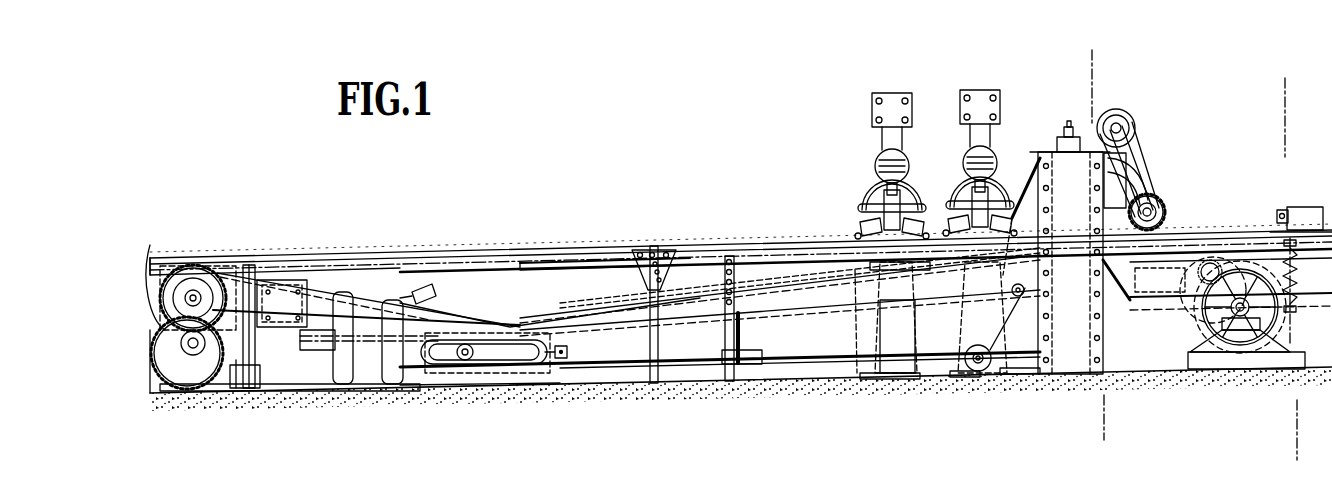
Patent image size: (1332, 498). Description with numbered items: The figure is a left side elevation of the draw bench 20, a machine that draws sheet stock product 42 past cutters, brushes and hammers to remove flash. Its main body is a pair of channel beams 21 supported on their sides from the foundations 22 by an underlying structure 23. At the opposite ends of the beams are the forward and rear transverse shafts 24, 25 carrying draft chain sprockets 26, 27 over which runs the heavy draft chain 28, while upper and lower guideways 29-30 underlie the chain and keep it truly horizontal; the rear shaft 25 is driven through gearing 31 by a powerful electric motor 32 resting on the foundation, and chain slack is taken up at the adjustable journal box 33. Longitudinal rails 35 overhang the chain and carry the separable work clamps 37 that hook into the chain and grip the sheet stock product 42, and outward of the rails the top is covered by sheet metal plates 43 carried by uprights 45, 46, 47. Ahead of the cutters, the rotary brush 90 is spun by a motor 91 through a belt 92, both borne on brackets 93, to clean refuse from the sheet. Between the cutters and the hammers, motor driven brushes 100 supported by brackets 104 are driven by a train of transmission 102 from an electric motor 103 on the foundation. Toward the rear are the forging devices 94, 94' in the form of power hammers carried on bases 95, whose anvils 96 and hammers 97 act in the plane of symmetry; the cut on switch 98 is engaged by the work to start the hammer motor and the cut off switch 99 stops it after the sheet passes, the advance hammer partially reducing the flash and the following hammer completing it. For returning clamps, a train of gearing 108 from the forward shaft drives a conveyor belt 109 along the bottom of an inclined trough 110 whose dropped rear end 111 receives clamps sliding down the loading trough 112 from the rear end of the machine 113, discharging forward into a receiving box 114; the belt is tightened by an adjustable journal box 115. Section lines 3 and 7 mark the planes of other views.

The draw bench 20 is at (610, 263).
The channel beams 21 is at (512, 263).
The foundations 22 is at (592, 402).
The underlying structure 23 is at (692, 353).
The forward transverse shaft 24 is at (1223, 250).
The rear transverse shaft 25 is at (240, 277).
The draft chain sprocket 26 is at (1197, 240).
The draft chain sprocket 27 is at (233, 273).
The draft chain 28 is at (497, 253).
The upper and lower guideways 29-30 is at (857, 317).
The gearing 31 is at (180, 302).
The electric motor 32 is at (340, 377).
The adjustable journal box 33 is at (1208, 227).
The rails 35 is at (753, 254).
The work clamps 37 is at (428, 288).
The sheet stock product 42 is at (1331, 188).
The sheet metal plates 43 is at (677, 247).
The uprights 45 is at (1070, 263).
The upright 46 is at (657, 293).
The upright 47 is at (243, 377).
The rotary brush 90 is at (1160, 230).
The motor 91 is at (1117, 118).
The belt 92 is at (1126, 150).
The brackets 93 is at (1150, 195).
The forging device 94 is at (897, 166).
The following forging device 94' is at (983, 138).
The bases 95 is at (907, 368).
The anvils 96 is at (883, 257).
The hammers 97 is at (915, 225).
The cut on switch 98 is at (1000, 215).
The cut off switch 99 is at (867, 210).
The motor driven brushes 100 is at (1010, 207).
The train of transmission 102 is at (1025, 377).
The electric motor 103 is at (977, 377).
The brackets 104 is at (1040, 183).
The train of gearing 108 is at (1195, 369).
The conveyor belt 109 is at (757, 365).
The inclined trough 110 is at (946, 302).
The rear end of trough 111 is at (530, 327).
The loading trough 112 is at (318, 287).
The rear end of the machine 113 is at (165, 258).
The receiving box 114 is at (1305, 291).
The adjustable journal box 115 is at (458, 373).
The section line 3 is at (1097, 246).
The section line 7 is at (1290, 270).